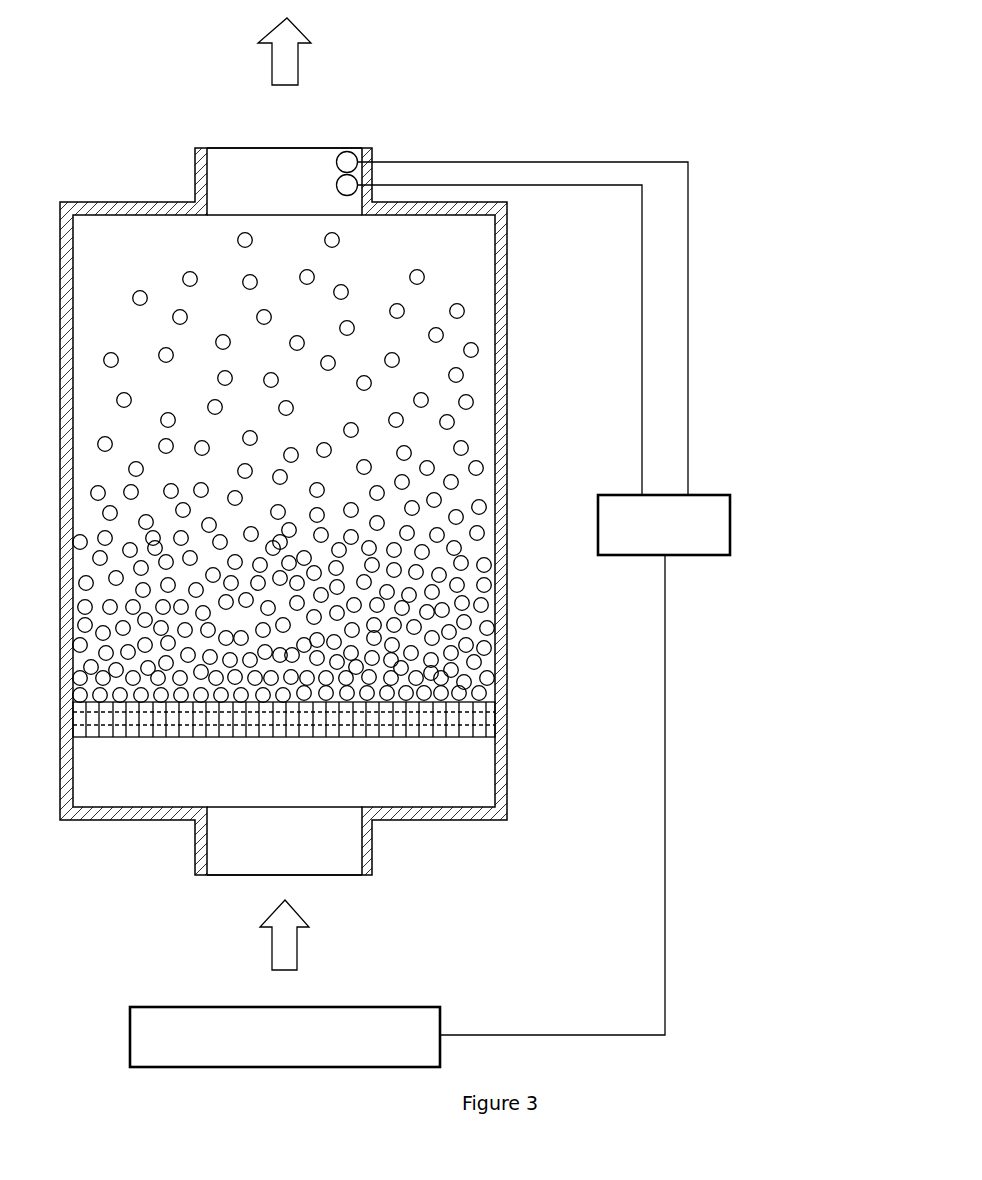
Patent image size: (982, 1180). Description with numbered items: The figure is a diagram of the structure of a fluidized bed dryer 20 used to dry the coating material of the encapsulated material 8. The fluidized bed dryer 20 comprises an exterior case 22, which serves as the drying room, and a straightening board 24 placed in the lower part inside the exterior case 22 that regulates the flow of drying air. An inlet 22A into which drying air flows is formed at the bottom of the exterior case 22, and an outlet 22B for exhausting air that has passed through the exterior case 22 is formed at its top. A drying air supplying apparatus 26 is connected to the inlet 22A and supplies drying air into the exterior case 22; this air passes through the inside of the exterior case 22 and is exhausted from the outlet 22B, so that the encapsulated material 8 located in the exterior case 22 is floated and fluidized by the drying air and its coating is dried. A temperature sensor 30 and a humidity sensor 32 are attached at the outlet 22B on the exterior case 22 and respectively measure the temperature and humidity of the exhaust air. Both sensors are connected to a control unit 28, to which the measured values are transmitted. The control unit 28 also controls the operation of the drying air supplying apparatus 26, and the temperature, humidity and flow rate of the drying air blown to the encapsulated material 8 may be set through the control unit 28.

The encapsulated material 8 is at (507, 601).
The fluidized bed dryer 20 is at (574, 132).
The exterior case 22 is at (507, 327).
The inlet 22A is at (199, 881).
The outlet 22B is at (195, 143).
The straightening board 24 is at (480, 715).
The drying air supplying apparatus 26 is at (397, 1007).
The control unit 28 is at (730, 521).
The temperature sensor 30 is at (345, 151).
The humidity sensor 32 is at (338, 189).